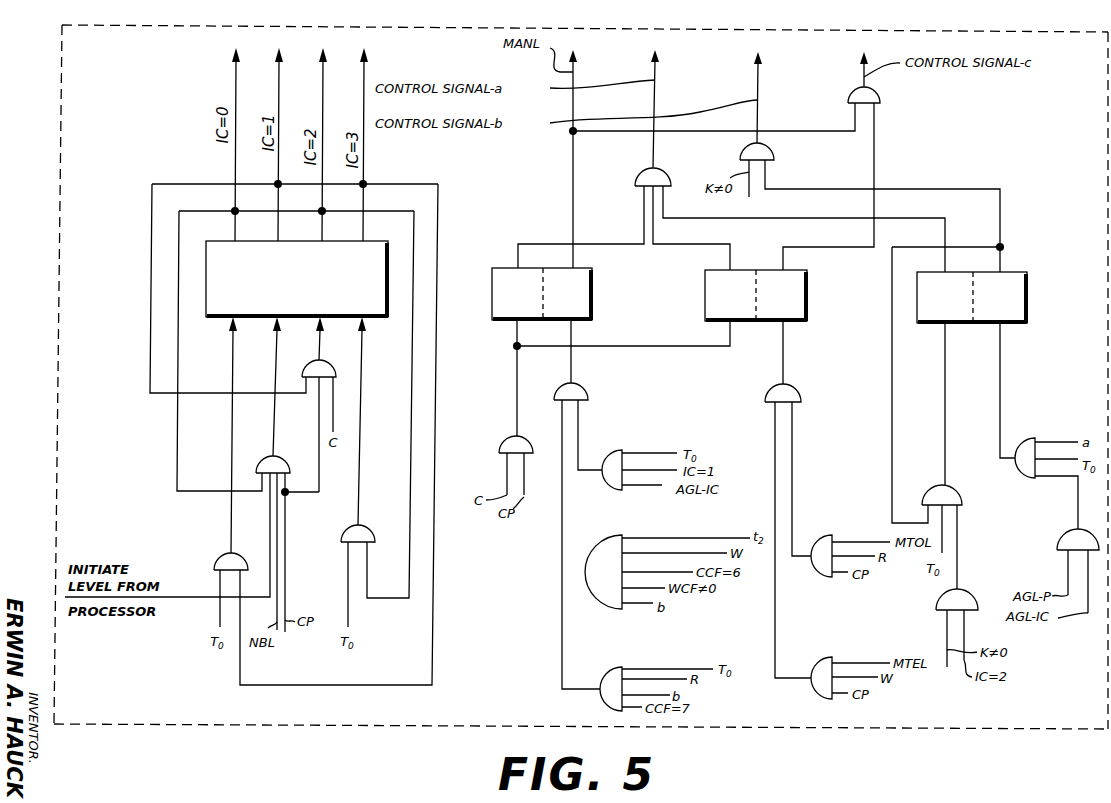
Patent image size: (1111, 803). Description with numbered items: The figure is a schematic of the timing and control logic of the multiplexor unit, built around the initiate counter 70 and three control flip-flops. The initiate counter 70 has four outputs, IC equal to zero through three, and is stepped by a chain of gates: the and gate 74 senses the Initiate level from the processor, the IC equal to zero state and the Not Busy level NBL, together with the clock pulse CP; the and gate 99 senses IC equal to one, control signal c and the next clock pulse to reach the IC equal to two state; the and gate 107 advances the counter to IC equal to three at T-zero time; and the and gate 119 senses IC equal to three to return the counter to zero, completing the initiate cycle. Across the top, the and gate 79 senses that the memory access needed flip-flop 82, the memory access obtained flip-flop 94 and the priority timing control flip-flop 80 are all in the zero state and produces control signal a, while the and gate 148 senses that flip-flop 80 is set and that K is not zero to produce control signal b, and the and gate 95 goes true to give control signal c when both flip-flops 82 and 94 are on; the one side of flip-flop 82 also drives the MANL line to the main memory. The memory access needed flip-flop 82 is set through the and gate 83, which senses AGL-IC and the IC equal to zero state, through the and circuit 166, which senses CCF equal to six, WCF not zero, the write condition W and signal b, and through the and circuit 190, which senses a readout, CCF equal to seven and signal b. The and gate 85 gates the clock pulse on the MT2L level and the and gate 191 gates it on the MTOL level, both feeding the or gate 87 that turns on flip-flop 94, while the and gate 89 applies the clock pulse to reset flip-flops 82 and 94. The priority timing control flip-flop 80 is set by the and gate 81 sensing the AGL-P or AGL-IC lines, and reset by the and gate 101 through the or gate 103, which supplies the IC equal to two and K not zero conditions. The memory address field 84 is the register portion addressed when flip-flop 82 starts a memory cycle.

The initiate counter 70 is at (213, 268).
The and gate 74 is at (270, 458).
The and gate 79 is at (646, 176).
The priority timing control flip-flop 80 is at (1027, 300).
The and gate 81 is at (1020, 470).
The memory access needed flip-flop 82 is at (492, 293).
The and gate 83 is at (606, 462).
The memory address field 84 is at (807, 320).
The and gate 85 is at (822, 647).
The or gate 87 is at (798, 397).
The and gate 89 is at (509, 440).
The memory access obtained flip-flop 94 is at (705, 297).
The and gate 95 is at (880, 100).
The and gate 99 is at (325, 369).
The and gate 101 is at (962, 499).
The or gate 103 is at (975, 606).
The and gate 107 is at (367, 535).
The and gate 119 is at (223, 558).
The and gate 148 is at (774, 153).
The and circuit 166 is at (592, 555).
The and circuit 190 is at (602, 685).
The and gate 191 is at (812, 548).